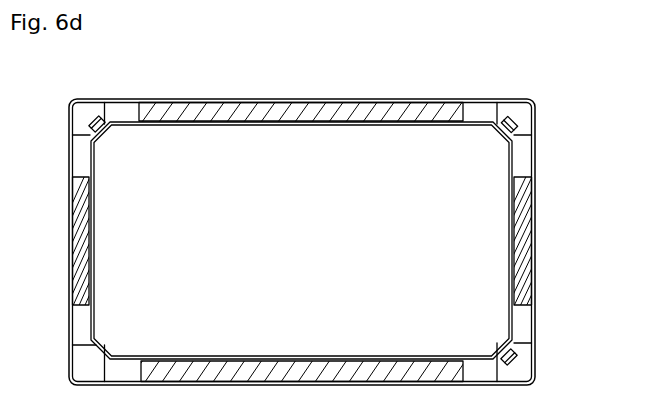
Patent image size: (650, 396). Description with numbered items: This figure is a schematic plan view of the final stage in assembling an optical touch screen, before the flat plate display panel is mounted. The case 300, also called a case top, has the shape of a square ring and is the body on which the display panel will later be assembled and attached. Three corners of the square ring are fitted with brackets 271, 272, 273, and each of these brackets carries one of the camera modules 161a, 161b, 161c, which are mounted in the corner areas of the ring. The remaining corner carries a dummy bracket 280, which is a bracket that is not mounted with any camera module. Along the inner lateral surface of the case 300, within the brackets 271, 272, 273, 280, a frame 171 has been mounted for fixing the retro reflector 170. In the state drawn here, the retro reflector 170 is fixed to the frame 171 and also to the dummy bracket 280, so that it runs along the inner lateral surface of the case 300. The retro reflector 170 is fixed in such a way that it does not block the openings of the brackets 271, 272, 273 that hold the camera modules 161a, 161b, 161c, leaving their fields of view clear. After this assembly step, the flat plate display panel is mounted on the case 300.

The case 300 is at (537, 205).
The retro reflector 170 is at (365, 124).
The frame 171 is at (293, 115).
The bracket 271 is at (82, 160).
The bracket 272 is at (527, 158).
The bracket 273 is at (522, 322).
The dummy bracket 280 is at (82, 322).
The camera module 161a is at (97, 117).
The camera module 161b is at (517, 121).
The camera module 161c is at (514, 362).